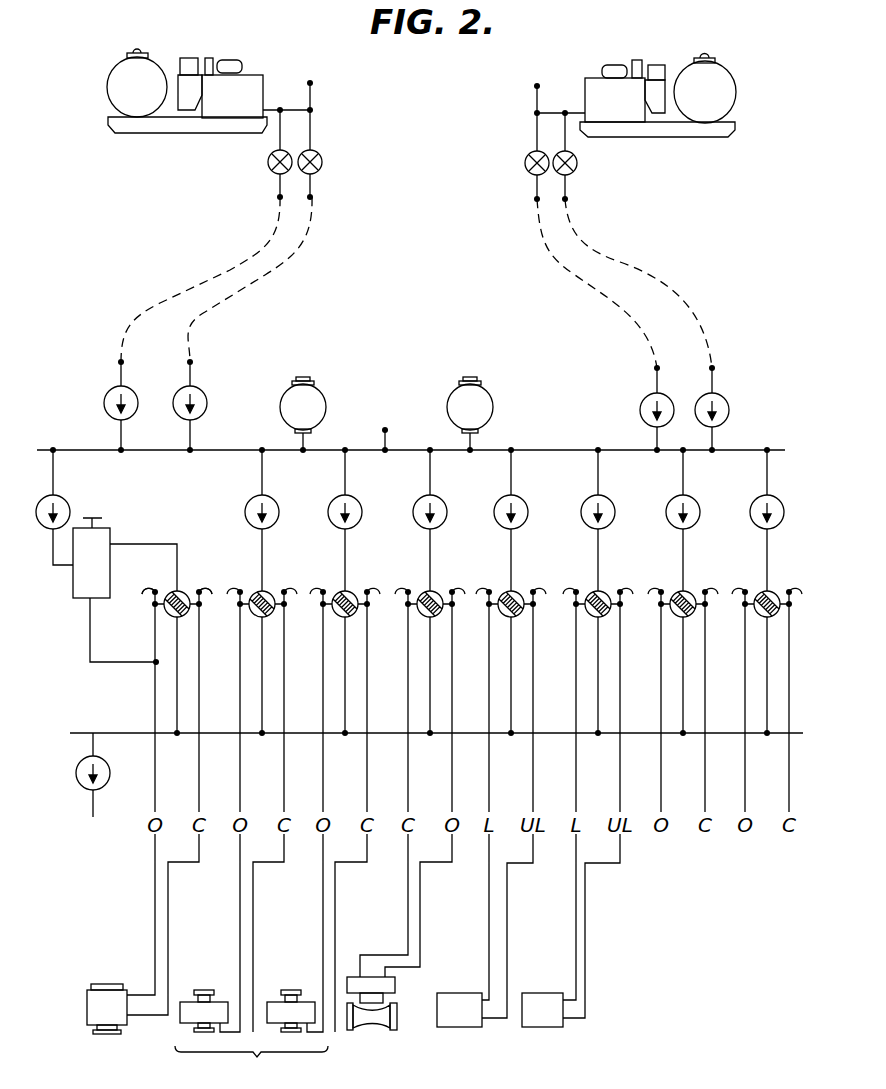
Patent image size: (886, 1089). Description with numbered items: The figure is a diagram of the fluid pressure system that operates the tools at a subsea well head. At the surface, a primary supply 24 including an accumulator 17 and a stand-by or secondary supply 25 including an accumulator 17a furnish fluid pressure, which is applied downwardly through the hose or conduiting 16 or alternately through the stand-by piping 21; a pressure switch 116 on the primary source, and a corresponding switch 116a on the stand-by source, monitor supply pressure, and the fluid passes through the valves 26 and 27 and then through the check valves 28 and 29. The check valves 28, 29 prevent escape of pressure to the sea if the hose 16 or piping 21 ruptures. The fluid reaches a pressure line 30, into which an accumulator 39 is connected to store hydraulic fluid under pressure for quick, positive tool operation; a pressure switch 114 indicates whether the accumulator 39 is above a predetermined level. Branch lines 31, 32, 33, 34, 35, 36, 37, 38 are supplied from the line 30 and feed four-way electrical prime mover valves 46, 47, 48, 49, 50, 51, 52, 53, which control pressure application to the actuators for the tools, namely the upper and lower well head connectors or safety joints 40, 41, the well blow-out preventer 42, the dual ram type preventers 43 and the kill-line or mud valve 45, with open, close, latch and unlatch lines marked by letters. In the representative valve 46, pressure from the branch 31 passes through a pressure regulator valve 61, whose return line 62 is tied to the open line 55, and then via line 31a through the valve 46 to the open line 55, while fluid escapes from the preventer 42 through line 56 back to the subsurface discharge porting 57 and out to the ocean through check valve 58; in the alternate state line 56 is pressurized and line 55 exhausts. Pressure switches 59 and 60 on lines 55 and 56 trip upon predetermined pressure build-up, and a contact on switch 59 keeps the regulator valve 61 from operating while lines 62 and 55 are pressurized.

The primary supply 24 is at (165, 71).
The accumulator 17 is at (113, 97).
The pressure switch 116 is at (310, 84).
The valve 26 is at (325, 163).
The stand-by or secondary supply 25 is at (684, 77).
The accumulator 17a is at (727, 91).
The supply line 116a is at (537, 86).
The valve 27 is at (518, 163).
The hose or conduiting 16 is at (290, 258).
The stand-by piping 21 is at (632, 268).
The check valve 28 is at (207, 400).
The check valve 29 is at (643, 401).
The accumulator 39 is at (318, 406).
The pressure switch 114 is at (375, 423).
The pressure line 30 is at (558, 450).
The branch line 31 is at (54, 465).
The line 31a is at (135, 544).
The branch line 32 is at (263, 465).
The branch line 33 is at (346, 465).
The branch line 34 is at (431, 465).
The branch line 35 is at (512, 465).
The branch line 36 is at (599, 465).
The branch line 37 is at (684, 465).
The branch line 38 is at (768, 465).
The pressure regulator valve 61 is at (73, 582).
The return line 62 is at (90, 612).
The pressure switch 59 is at (150, 580).
The pressure switch 60 is at (212, 588).
The electrical prime mover valve 46 is at (168, 594).
The electrical prime mover valve 47 is at (253, 594).
The electrical prime mover valve 48 is at (336, 594).
The electrical prime mover valve 49 is at (421, 594).
The electrical prime mover valve 50 is at (502, 594).
The electrical prime mover valve 51 is at (589, 594).
The electrical prime mover valve 52 is at (674, 594).
The electrical prime mover valve 53 is at (758, 594).
The subsurface discharge porting 57 is at (112, 733).
The check valve 58 is at (76, 774).
The open line 55 is at (155, 760).
The line 56 is at (199, 770).
The well blow-out preventer 42 is at (125, 1025).
The dual ram type preventers 43 is at (257, 1058).
The kill-line or mud valve 45 is at (372, 1028).
The upper well head connector or safety joint 40 is at (453, 1027).
The lower well head connector or safety joint 41 is at (551, 1027).